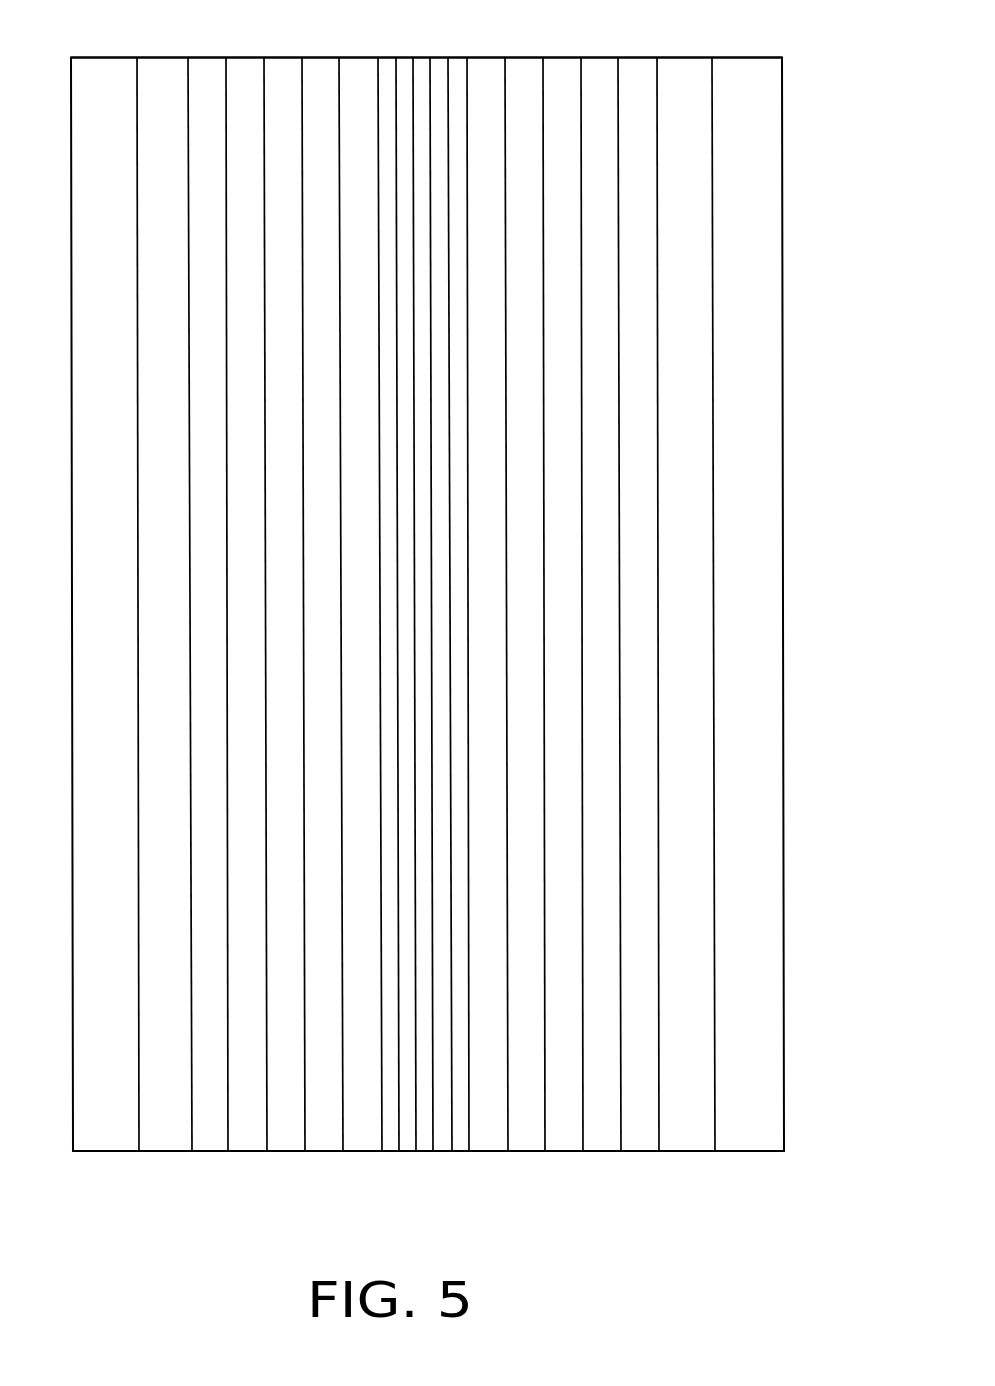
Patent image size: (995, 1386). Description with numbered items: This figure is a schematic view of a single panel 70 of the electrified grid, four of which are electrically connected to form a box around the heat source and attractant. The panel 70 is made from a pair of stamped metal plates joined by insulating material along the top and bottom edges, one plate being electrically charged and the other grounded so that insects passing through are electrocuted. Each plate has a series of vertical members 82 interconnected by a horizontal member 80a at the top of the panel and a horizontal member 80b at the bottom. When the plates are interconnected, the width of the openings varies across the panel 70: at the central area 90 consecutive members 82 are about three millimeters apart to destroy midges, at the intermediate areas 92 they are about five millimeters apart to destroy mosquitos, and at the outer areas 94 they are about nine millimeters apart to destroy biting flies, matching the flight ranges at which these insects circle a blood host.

The panel 70 is at (803, 260).
The horizontal member 80a is at (557, 57).
The horizontal member 80b is at (752, 1150).
The vertical members 82 is at (659, 927).
The area 90 is at (467, 1157).
The areas 92 is at (378, 1157).
The areas 94 is at (73, 1157).